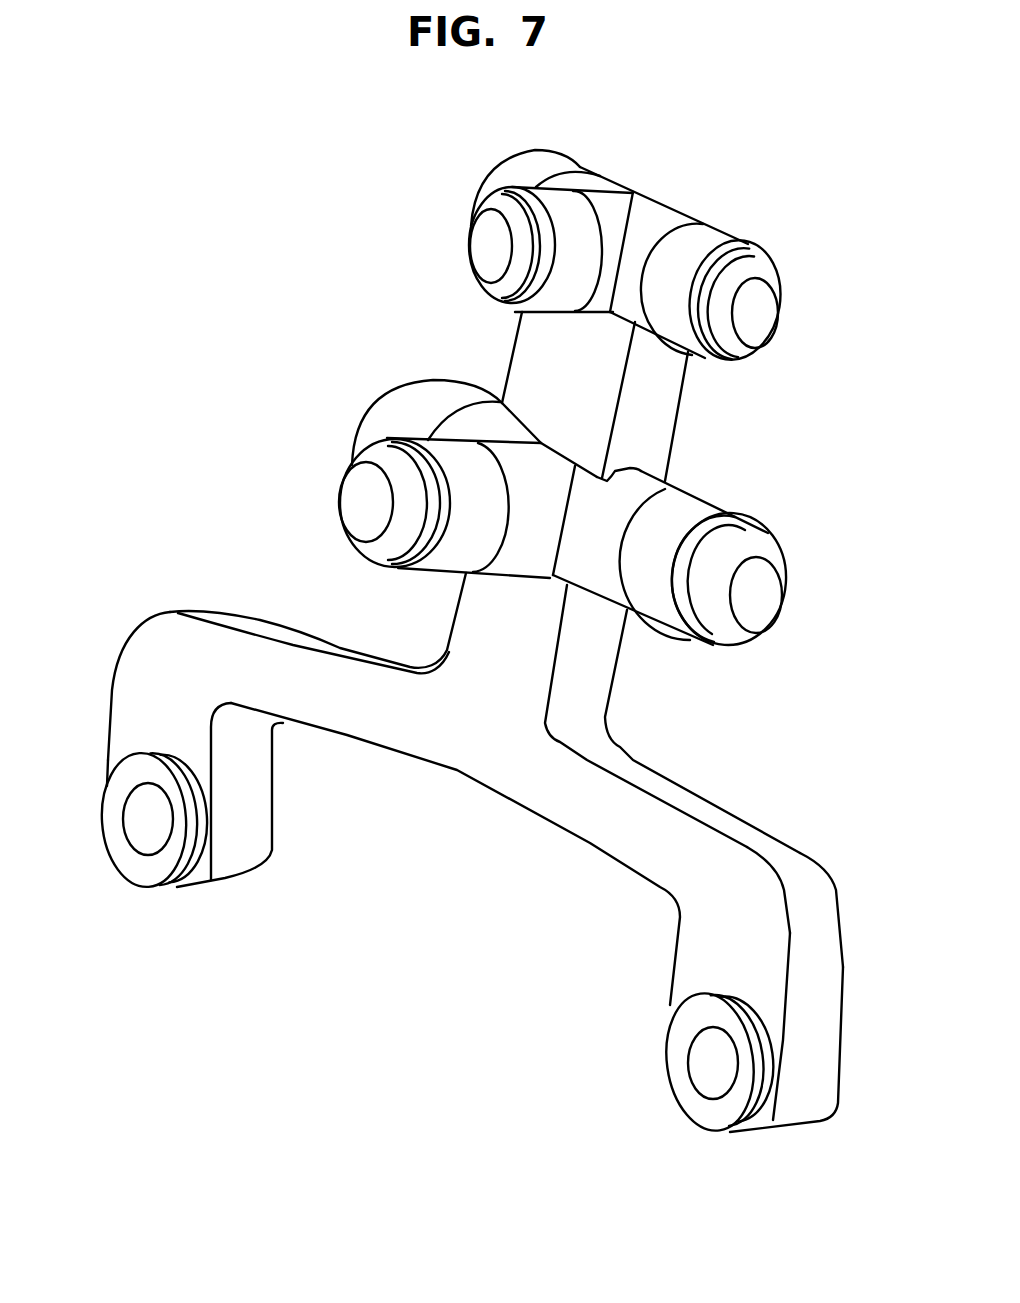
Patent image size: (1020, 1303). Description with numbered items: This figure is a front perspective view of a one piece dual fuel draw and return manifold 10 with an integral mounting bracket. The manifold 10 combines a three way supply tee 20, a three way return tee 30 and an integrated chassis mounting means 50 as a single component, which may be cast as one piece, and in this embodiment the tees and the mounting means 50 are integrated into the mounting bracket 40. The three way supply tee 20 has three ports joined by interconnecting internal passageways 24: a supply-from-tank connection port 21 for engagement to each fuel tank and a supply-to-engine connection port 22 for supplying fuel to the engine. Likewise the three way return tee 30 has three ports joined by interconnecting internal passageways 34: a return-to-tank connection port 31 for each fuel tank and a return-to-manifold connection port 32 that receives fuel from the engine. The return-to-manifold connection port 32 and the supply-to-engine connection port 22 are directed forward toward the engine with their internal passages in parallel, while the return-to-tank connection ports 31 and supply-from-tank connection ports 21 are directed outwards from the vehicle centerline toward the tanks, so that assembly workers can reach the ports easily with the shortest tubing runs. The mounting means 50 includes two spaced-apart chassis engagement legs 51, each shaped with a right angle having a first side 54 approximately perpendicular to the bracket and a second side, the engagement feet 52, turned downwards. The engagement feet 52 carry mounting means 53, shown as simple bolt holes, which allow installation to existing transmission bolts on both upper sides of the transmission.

The manifold 10 is at (782, 528).
The three way supply tee 20 is at (527, 467).
The supply-from-tank connection port 21 is at (403, 417).
The supply-to-engine connection port 22 is at (413, 576).
The interconnecting internal passageways 24 is at (750, 598).
The three way return tee 30 is at (680, 207).
The return-to-tank connection port 31 is at (575, 163).
The return-to-manifold connection port 32 is at (522, 312).
The interconnecting internal passageways 34 is at (757, 322).
The mounting bracket 40 is at (678, 405).
The integrated chassis mounting means 50 is at (347, 736).
The chassis engagement legs 51 is at (147, 623).
The engagement feet 52 is at (108, 760).
The mounting means 53 is at (142, 822).
The first side 54 is at (670, 795).